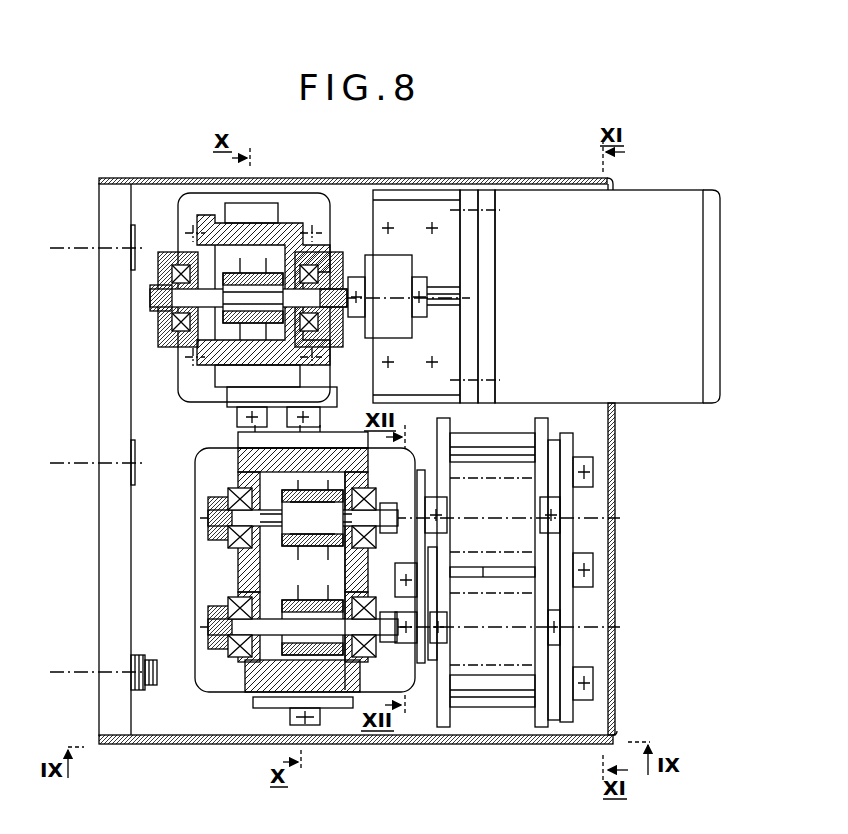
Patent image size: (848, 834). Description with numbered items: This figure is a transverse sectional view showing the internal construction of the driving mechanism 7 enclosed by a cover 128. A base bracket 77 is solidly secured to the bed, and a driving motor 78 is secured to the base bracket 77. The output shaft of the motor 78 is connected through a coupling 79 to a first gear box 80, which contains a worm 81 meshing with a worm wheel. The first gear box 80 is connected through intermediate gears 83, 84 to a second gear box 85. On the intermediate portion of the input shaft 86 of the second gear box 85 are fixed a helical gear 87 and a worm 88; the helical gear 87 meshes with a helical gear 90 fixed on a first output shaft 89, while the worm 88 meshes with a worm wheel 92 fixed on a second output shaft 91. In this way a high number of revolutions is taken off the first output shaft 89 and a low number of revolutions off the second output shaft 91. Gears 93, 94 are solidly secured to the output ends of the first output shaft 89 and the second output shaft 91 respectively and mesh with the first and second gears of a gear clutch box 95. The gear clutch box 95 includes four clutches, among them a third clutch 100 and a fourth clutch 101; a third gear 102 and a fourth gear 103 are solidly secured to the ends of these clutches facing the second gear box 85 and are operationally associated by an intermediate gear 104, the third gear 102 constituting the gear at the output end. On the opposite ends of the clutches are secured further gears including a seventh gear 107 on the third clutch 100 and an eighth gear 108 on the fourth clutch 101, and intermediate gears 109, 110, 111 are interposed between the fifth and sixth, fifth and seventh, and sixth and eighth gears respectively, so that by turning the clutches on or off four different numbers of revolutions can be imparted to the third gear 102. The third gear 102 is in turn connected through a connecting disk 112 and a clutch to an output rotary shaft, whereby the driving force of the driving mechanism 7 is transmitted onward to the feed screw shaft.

The driving mechanism 7 is at (192, 176).
The base bracket 77 is at (100, 510).
The driving motor 78 is at (662, 202).
The coupling 79 is at (396, 267).
The first gear box 80 is at (283, 226).
The worm 81 is at (238, 286).
The intermediate gear 83 is at (238, 404).
The intermediate gear 84 is at (325, 402).
The second gear box 85 is at (240, 456).
The input shaft 86 is at (242, 576).
The helical gear 87 is at (242, 546).
The worm 88 is at (322, 606).
The first output shaft 89 is at (228, 488).
The helical gear 90 is at (212, 518).
The second output shaft 91 is at (262, 688).
The worm wheel 92 is at (336, 692).
The gear 93 is at (436, 480).
The gear 94 is at (425, 670).
The gear clutch box 95 is at (440, 682).
The third clutch 100 is at (515, 472).
The fourth clutch 101 is at (505, 640).
The third gear 102 is at (456, 532).
The fourth gear 103 is at (422, 652).
The intermediate gear 104 is at (422, 566).
The seventh gear 107 is at (572, 507).
The eighth gear 108 is at (572, 652).
The intermediate gear 109 is at (582, 572).
The intermediate gear 110 is at (568, 452).
The intermediate gear 111 is at (572, 705).
The connecting disk 112 is at (440, 506).
The cover 128 is at (398, 178).